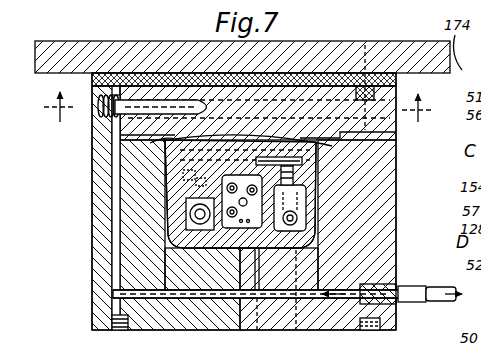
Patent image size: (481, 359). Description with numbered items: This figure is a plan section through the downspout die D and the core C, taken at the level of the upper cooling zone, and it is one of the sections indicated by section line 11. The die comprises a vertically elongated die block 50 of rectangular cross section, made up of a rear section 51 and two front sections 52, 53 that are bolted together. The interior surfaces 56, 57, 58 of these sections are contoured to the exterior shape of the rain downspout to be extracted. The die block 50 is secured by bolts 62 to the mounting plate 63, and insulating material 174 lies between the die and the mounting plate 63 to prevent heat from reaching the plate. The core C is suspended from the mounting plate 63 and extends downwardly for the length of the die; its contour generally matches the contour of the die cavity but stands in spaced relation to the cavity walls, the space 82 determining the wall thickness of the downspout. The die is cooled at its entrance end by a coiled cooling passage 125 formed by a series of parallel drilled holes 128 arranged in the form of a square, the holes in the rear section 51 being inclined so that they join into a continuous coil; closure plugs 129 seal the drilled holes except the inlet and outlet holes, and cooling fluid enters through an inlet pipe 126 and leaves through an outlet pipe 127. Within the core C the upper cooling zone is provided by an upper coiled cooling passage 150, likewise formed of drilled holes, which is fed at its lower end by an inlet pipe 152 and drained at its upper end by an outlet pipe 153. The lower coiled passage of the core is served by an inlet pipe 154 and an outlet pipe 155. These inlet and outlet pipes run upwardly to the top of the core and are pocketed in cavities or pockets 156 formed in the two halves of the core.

The bolts 62 is at (95, 44).
The mounting plate 63 is at (392, 46).
The drilled holes 128 is at (147, 78).
The insulating material 174 is at (397, 81).
The rear section 51 is at (92, 88).
The section line 11 is at (242, 112).
The closure plugs 129 is at (112, 128).
The inlet pipe 154 is at (185, 175).
The core C is at (192, 184).
The interior surface 57 is at (318, 196).
The die block 50 is at (91, 204).
The interior surface 58 is at (190, 232).
The downspout die D is at (90, 266).
The front section 52 is at (92, 292).
The coiled cooling passage 125 is at (196, 304).
The inlet pipe 152 is at (232, 230).
The pockets 156 is at (254, 211).
The upper coiled cooling passage 150 is at (259, 300).
The inlet pipe 126 is at (400, 303).
The outlet pipe 127 is at (440, 304).
The front section 53 is at (396, 262).
The interior surface 56 is at (322, 166).
The outlet pipe 155 is at (302, 162).
The outlet pipe 153 is at (294, 206).
The space 82 is at (306, 218).